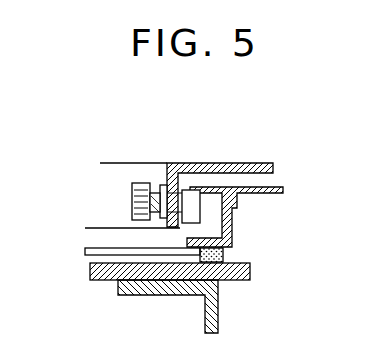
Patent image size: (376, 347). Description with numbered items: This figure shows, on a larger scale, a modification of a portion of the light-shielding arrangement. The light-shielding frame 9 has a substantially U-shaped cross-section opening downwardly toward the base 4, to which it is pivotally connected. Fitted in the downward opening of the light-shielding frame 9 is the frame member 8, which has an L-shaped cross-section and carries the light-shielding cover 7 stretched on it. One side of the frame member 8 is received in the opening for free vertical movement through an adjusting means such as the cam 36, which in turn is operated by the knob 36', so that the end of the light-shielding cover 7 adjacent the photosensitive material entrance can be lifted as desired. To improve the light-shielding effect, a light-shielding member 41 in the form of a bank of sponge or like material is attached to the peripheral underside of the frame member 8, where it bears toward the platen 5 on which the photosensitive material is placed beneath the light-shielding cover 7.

The base 4 is at (135, 296).
The platen 5 is at (100, 263).
The light-shielding cover 7 is at (108, 248).
The frame member 8 is at (233, 228).
The light-shielding frame 9 is at (208, 165).
The cam 36 is at (169, 178).
The knob 36' is at (100, 184).
The light-shielding member 41 is at (224, 256).